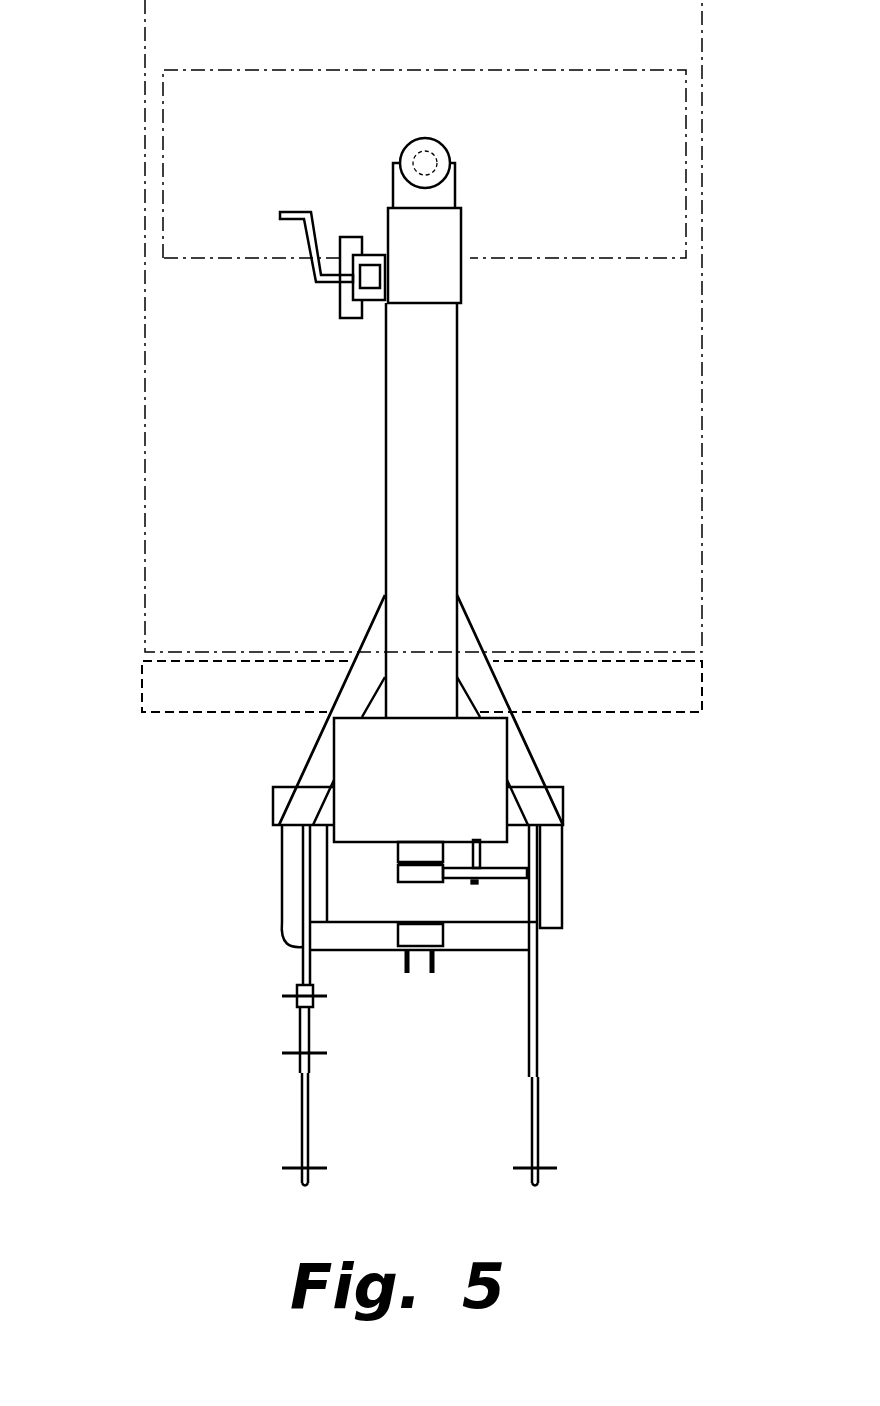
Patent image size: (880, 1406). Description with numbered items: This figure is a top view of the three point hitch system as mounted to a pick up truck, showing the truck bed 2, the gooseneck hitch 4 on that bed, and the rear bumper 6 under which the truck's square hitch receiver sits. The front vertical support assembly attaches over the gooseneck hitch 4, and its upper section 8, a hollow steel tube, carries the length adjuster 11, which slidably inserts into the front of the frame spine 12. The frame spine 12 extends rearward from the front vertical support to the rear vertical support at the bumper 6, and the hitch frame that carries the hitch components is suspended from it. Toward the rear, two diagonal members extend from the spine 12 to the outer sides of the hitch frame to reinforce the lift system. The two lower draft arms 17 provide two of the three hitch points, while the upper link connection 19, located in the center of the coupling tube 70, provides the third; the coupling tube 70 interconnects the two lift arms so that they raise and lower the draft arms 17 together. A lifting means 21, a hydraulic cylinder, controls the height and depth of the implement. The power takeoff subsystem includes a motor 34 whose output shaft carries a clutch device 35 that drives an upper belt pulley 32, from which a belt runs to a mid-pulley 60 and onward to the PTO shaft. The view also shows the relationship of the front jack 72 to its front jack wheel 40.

The truck bed 2 is at (218, 335).
The gooseneck hitch 4 is at (428, 160).
The rear bumper 6 is at (173, 683).
The upper section 8 is at (408, 148).
The length adjuster 11 is at (402, 200).
The frame spine 12 is at (412, 488).
The lower draft arms 17 is at (533, 1142).
The upper link connection 19 is at (417, 970).
The lifting means 21 is at (287, 882).
The upper belt pulley 32 is at (418, 875).
The motor 34 is at (447, 810).
The clutch device 35 is at (432, 853).
The front jack wheel 40 is at (350, 247).
The mid-pulley 60 is at (495, 873).
The coupling tube 70 is at (345, 940).
The front jack 72 is at (373, 292).